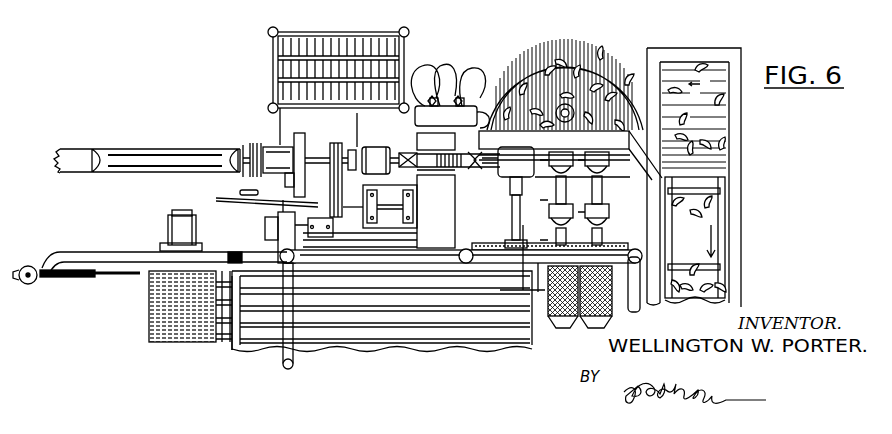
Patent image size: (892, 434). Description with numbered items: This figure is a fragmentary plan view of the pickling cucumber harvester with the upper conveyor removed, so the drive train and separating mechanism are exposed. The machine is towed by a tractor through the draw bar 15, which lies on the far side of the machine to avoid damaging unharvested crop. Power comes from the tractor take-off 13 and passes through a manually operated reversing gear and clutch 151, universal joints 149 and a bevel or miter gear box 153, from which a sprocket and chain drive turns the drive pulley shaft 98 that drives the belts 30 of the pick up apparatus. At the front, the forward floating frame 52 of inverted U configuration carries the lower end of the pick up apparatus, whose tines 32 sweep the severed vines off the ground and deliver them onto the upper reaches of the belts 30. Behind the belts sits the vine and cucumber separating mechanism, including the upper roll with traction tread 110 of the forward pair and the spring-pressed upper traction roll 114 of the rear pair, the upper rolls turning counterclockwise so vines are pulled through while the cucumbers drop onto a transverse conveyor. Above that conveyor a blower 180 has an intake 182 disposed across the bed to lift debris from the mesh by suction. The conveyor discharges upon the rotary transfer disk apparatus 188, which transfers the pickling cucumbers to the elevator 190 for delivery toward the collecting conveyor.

The tractor take-off 13 is at (141, 153).
The draw bar 15 is at (68, 153).
The belts 30 is at (399, 330).
The tines 32 is at (225, 339).
The forward floating frame 52 is at (296, 358).
The drive pulley shaft 98 is at (523, 290).
The upper roll with traction tread 110 is at (573, 322).
The upper traction roll 114 is at (589, 322).
The universal joints 149 is at (464, 154).
The reversing gear and clutch 151 is at (393, 137).
The bevel or miter gear box 153 is at (508, 197).
The blower 180 is at (436, 190).
The intake 182 is at (620, 197).
The rotary transfer disk apparatus 188 is at (568, 48).
The elevator 190 is at (686, 262).